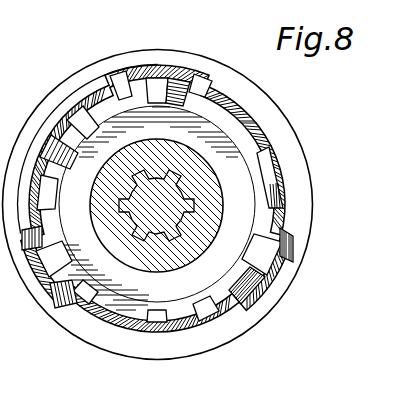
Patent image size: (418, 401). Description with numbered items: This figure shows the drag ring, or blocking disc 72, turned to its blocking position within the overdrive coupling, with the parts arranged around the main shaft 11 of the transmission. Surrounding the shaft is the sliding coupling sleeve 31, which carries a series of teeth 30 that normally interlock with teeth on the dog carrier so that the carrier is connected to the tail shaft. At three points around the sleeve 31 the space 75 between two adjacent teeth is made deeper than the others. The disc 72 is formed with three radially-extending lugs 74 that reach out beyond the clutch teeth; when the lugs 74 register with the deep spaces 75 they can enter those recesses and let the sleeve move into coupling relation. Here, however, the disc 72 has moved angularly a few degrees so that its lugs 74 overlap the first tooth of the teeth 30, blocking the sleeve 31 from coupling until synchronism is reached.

The main shaft 11 is at (122, 210).
The teeth 30 is at (192, 70).
The sliding coupling sleeve 31 is at (67, 118).
The disc 72 is at (227, 152).
The lugs 74 is at (128, 72).
The space 75 is at (158, 78).